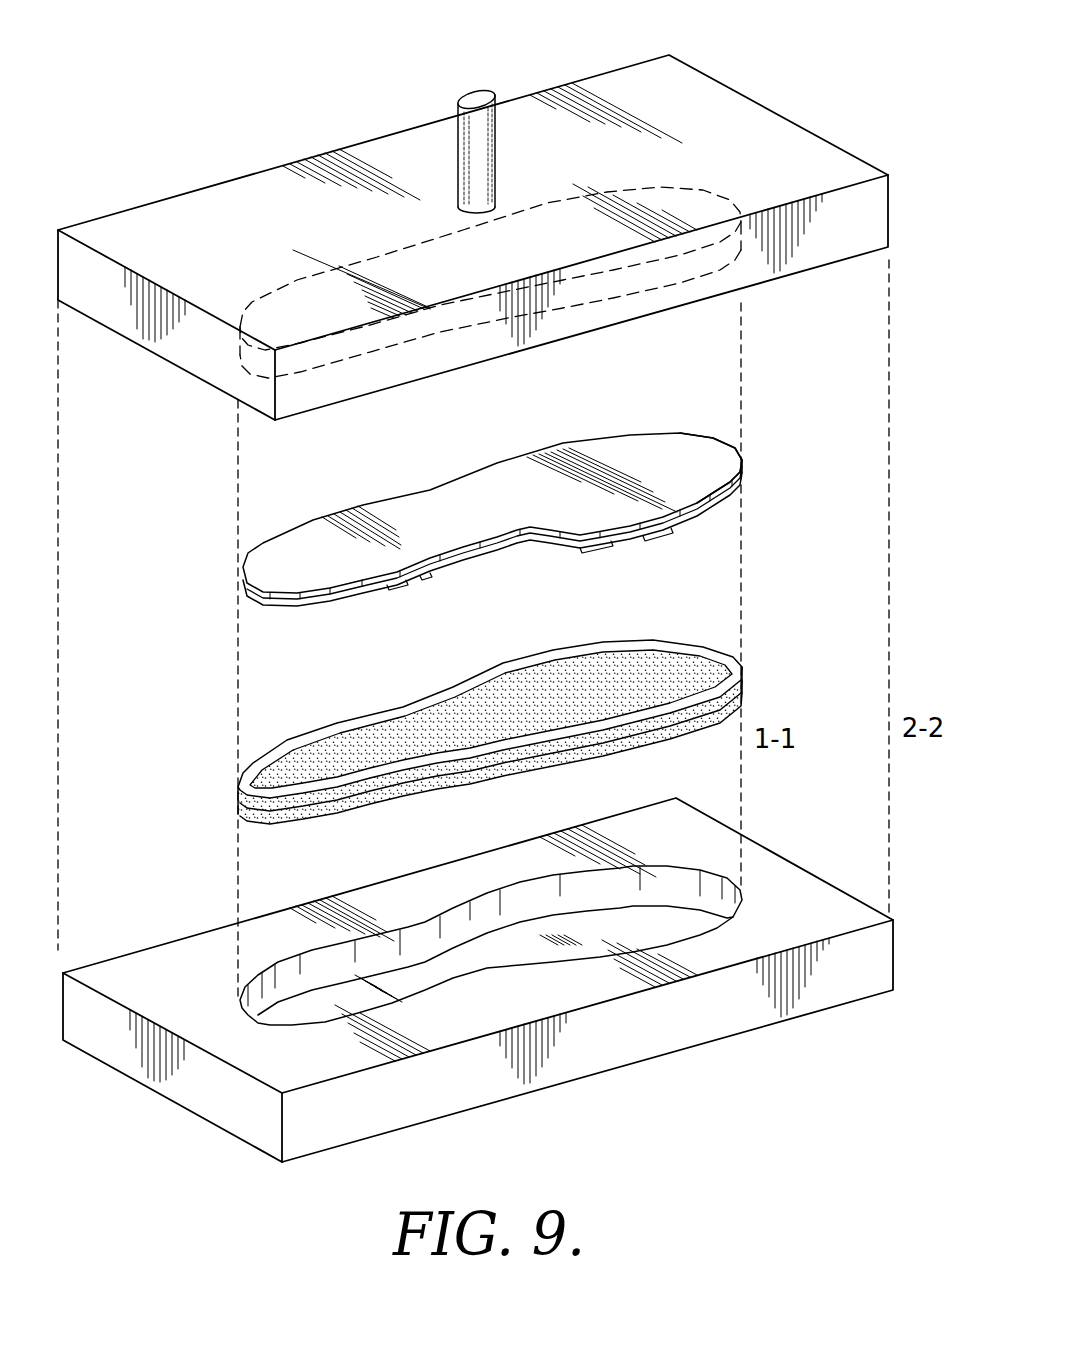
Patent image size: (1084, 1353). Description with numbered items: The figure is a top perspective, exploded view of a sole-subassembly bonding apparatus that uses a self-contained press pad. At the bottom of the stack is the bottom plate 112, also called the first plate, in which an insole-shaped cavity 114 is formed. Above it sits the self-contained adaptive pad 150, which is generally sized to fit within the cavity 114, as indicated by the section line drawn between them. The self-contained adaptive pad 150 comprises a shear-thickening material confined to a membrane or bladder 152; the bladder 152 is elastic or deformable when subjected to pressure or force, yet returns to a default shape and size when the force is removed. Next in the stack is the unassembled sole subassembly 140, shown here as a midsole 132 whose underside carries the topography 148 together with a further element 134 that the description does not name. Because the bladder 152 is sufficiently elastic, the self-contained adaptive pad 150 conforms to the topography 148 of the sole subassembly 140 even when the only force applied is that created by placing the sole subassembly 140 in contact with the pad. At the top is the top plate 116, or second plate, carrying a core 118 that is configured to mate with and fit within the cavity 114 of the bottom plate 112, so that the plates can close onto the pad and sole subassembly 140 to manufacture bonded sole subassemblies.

The bottom plate 112 is at (217, 1105).
The cavity 114 is at (298, 970).
The top plate 116 is at (723, 110).
The core 118 is at (673, 278).
The midsole 132 is at (440, 495).
The tabs on side edge of insole board 134 is at (647, 538).
The sole subassembly 140 is at (742, 452).
The topography 148 is at (443, 600).
The self-contained adaptive pad 150 is at (458, 732).
The bladder 152 is at (343, 723).